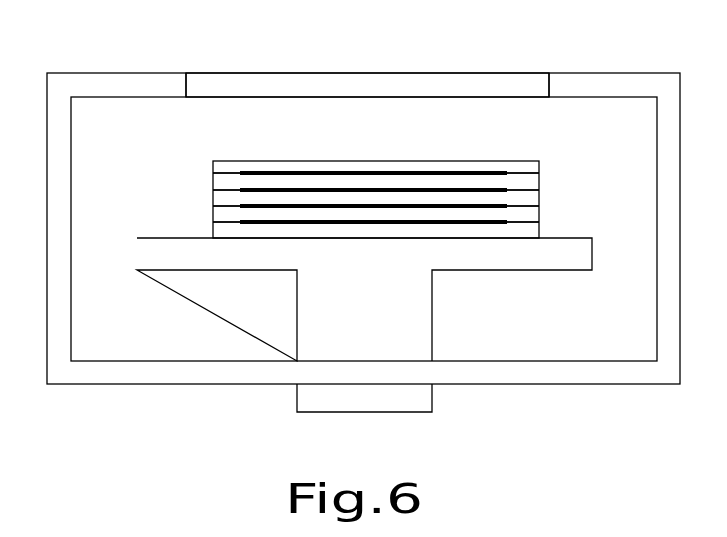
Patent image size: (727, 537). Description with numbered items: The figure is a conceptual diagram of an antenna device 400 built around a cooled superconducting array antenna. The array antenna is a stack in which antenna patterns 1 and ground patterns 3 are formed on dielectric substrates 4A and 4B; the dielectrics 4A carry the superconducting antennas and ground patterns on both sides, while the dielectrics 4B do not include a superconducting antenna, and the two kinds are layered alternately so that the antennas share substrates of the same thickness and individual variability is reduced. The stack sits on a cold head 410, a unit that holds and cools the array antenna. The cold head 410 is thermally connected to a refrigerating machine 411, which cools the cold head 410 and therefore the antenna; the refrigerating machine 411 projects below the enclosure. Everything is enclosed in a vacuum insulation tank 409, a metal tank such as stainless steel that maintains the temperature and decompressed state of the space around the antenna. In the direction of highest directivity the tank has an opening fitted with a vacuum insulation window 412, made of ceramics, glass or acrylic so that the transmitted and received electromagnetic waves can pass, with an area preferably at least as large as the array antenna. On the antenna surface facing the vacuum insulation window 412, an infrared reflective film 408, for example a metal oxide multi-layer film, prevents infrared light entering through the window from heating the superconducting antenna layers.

The antenna device 400 is at (94, 47).
The vacuum insulation tank 409 is at (573, 79).
The vacuum insulation window 412 is at (477, 79).
The infrared reflective film 408 is at (487, 165).
The superconducting antenna 1 is at (300, 172).
The ground pattern 3 is at (373, 197).
The dielectric 4A is at (532, 183).
The dielectric 4B is at (220, 198).
The cold head 410 is at (473, 265).
The refrigerating machine 411 is at (423, 405).